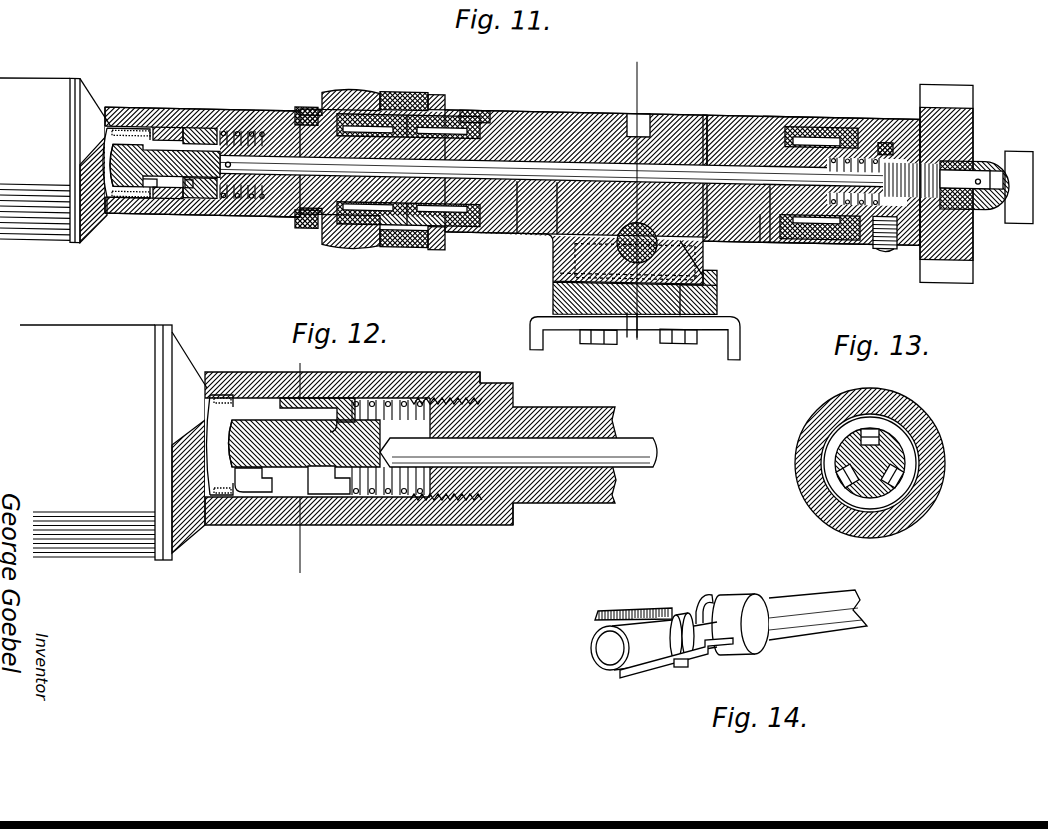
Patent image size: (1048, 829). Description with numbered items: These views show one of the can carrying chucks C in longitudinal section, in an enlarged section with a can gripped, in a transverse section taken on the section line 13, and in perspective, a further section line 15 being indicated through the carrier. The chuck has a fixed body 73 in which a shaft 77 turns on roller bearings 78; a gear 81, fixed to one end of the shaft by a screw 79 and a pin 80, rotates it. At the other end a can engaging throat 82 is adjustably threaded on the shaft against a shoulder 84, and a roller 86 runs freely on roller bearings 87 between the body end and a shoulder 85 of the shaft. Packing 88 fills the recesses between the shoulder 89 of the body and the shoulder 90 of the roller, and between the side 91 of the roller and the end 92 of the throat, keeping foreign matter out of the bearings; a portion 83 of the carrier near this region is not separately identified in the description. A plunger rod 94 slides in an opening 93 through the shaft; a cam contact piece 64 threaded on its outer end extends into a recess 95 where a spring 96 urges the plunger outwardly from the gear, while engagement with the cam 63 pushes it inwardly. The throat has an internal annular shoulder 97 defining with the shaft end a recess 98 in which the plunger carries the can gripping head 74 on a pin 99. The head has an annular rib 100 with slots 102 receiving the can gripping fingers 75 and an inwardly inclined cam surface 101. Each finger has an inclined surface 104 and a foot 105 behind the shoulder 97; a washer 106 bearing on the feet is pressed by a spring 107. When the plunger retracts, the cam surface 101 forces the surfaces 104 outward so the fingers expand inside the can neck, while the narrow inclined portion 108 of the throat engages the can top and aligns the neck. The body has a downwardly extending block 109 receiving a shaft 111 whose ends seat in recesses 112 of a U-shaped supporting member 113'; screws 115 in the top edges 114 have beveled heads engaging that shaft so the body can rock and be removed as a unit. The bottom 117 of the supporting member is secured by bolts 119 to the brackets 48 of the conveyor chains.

In FIG. 12, the section line 13 is at (411, 470).
In FIG. 11, the section line 15 is at (611, 202).
In FIG. 12, the section line 15 is at (518, 452).
In FIG. 11, the brackets 48 is at (712, 311).
In FIG. 11, the cam 63 is at (1023, 203).
In FIG. 11, the cam contact piece 64 is at (990, 138).
In FIG. 11, the fixed body 73 is at (562, 101).
In FIG. 11, the can gripping head 74 is at (143, 170).
In FIG. 12, the can gripping head 74 is at (287, 453).
In FIG. 11, the can gripping fingers 75 is at (160, 145).
In FIG. 12, the can gripping fingers 75 is at (250, 413).
In FIG. 14, the can gripping fingers 75 is at (618, 610).
In FIG. 11, the shaft 77 is at (698, 123).
In FIG. 12, the shaft 77 is at (500, 517).
In FIG. 11, the roller bearings 78 is at (470, 104).
In FIG. 11, the screw 79 is at (888, 230).
In FIG. 11, the pin 80 is at (888, 127).
In FIG. 11, the gear 81 is at (940, 78).
In FIG. 11, the can engaging throat 82 is at (200, 126).
In FIG. 13, the can engaging throat 82 is at (943, 457).
In FIG. 11, the barrel 83 is at (267, 122).
In FIG. 11, the shoulder 84 is at (310, 97).
In FIG. 11, the shoulder 85 is at (313, 211).
In FIG. 11, the roller 86 is at (347, 83).
In FIG. 11, the roller bearings 87 is at (383, 104).
In FIG. 11, the packing 88 is at (302, 222).
In FIG. 11, the shoulder of the body 89 is at (437, 234).
In FIG. 11, the shoulder of the roller 90 is at (393, 235).
In FIG. 11, the side of the roller 91 is at (340, 238).
In FIG. 11, the end of the throat 92 is at (283, 209).
In FIG. 11, the opening 93 is at (648, 155).
In FIG. 11, the plunger rod 94 is at (772, 202).
In FIG. 11, the recess 95 is at (840, 145).
In FIG. 11, the spring 96 is at (867, 186).
In FIG. 11, the internal annular shoulder 97 is at (192, 179).
In FIG. 12, the internal annular shoulder 97 is at (323, 403).
In FIG. 13, the internal annular shoulder 97 is at (892, 445).
In FIG. 11, the recess 98 is at (217, 214).
In FIG. 11, the pin 99 is at (230, 157).
In FIG. 12, the pin 99 is at (383, 492).
In FIG. 11, the annular rib 100 is at (152, 170).
In FIG. 14, the annular rib 100 is at (682, 608).
In FIG. 12, the cam surface 101 is at (250, 465).
In FIG. 14, the cam surface 101 is at (643, 652).
In FIG. 13, the slots 102 is at (880, 500).
In FIG. 14, the slots 102 is at (687, 667).
In FIG. 12, the inclined surface 104 is at (237, 413).
In FIG. 14, the inclined surface 104 is at (595, 625).
In FIG. 12, the feet 105 is at (340, 402).
In FIG. 14, the feet 105 is at (710, 593).
In FIG. 12, the washer 106 is at (347, 490).
In FIG. 12, the spring 107 is at (403, 407).
In FIG. 11, the inclined can engaging portion 108 is at (132, 77).
In FIG. 11, the projection or block 109 is at (583, 235).
In FIG. 11, the shaft 111 is at (562, 256).
In FIG. 11, the recesses 112 is at (600, 258).
In FIG. 11, the supporting member 113' is at (599, 263).
In FIG. 11, the top edges 114 is at (710, 253).
In FIG. 11, the screws 115 is at (713, 263).
In FIG. 11, the bottom 117 is at (632, 300).
In FIG. 11, the bolts 119 is at (673, 334).
In FIG. 11, the can carrying chuck C is at (412, 148).